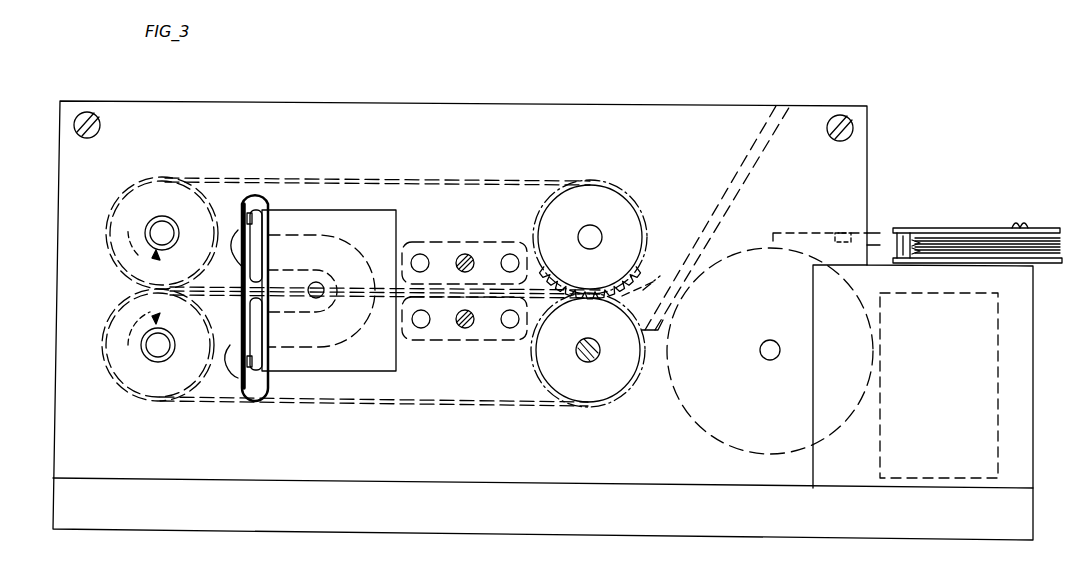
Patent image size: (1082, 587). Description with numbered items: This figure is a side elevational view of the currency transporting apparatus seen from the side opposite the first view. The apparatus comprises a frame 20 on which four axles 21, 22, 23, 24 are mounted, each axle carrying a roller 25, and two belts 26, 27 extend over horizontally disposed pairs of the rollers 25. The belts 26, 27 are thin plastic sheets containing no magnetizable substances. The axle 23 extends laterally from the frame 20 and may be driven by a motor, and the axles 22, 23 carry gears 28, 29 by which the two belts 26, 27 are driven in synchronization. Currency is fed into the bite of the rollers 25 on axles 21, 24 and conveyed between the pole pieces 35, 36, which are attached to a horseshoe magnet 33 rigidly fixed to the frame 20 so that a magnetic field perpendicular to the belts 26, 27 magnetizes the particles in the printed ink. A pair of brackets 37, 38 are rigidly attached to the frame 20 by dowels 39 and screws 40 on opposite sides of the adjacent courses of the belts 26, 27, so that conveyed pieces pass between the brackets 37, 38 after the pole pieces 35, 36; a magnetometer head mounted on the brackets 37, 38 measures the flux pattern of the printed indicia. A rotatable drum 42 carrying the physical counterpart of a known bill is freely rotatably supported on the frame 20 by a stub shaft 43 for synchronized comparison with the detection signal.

The frame 20 is at (553, 116).
The axle 21 is at (171, 228).
The axle 22 is at (596, 238).
The axle 23 is at (596, 354).
The axle 24 is at (160, 356).
The roller 25 is at (136, 190).
The belt 26 is at (386, 401).
The belt 27 is at (436, 180).
The gear 28 is at (645, 272).
The gear 29 is at (645, 289).
The horseshoe magnet 33 is at (321, 322).
The magnetic pole piece 35 is at (240, 360).
The magnetic pole piece 36 is at (244, 232).
The bracket 37 is at (446, 330).
The bracket 38 is at (442, 255).
The dowel 39 is at (418, 256).
The screw 40 is at (467, 256).
The rotatable drum 42 is at (688, 406).
The stub shaft 43 is at (772, 360).